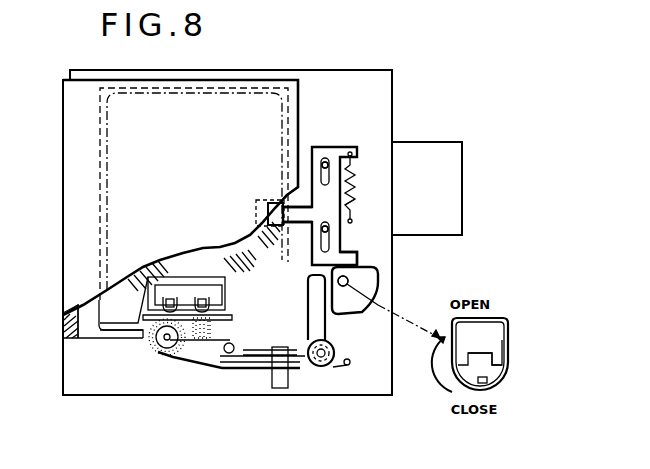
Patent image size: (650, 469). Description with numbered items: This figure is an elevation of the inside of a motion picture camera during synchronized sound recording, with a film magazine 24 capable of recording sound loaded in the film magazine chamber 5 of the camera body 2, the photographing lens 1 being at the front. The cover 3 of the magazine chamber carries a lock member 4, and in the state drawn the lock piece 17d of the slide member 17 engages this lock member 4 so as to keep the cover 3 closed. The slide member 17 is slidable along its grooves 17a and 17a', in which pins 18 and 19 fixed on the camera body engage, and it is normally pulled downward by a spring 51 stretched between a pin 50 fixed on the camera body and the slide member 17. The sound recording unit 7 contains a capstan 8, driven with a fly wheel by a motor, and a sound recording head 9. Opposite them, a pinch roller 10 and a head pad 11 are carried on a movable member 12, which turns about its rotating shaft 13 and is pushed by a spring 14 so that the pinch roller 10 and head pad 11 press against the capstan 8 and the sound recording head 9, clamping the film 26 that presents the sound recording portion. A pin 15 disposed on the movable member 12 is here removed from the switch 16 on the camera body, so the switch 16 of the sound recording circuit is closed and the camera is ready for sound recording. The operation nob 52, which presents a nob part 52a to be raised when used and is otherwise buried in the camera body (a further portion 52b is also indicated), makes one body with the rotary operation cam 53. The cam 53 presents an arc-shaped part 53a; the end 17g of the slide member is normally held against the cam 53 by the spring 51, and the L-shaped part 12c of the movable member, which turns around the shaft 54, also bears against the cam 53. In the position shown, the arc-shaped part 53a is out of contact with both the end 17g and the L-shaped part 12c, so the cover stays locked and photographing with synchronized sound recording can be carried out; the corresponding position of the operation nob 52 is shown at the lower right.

The photographing lens 1 is at (414, 150).
The camera body 2 is at (328, 78).
The cover of the magazine chamber 3 is at (200, 96).
The lock member 4 is at (262, 208).
The film magazine chamber 5 is at (97, 316).
The sound recording unit 7 is at (128, 273).
The capstan 8 is at (177, 282).
The sound recording head 9 is at (200, 282).
The pinch roller 10 is at (158, 340).
The head pad 11 is at (198, 332).
The movable member 12 is at (217, 345).
The L-shaped part 12c is at (333, 327).
The rotating shaft 13 is at (321, 358).
The spring 14 is at (347, 366).
The pin 15 is at (229, 354).
The switch 16 is at (278, 385).
The slide member 17 is at (311, 148).
The groove 17a is at (384, 241).
The groove 17a' is at (272, 153).
The lock piece 17d is at (282, 203).
The end of the slide member 17g is at (357, 256).
The pin 18 is at (330, 229).
The pin 19 is at (325, 158).
The film magazine 24 is at (252, 245).
The film 26 is at (142, 328).
The pin 50 is at (352, 220).
The spring 51 is at (352, 168).
The operation nob 52 is at (482, 356).
The nob part 52a is at (480, 332).
The knob close position 52b is at (490, 383).
The rotary operation cam 53 is at (368, 312).
The arc-shaped part 53a is at (349, 282).
The shaft 54 is at (352, 296).